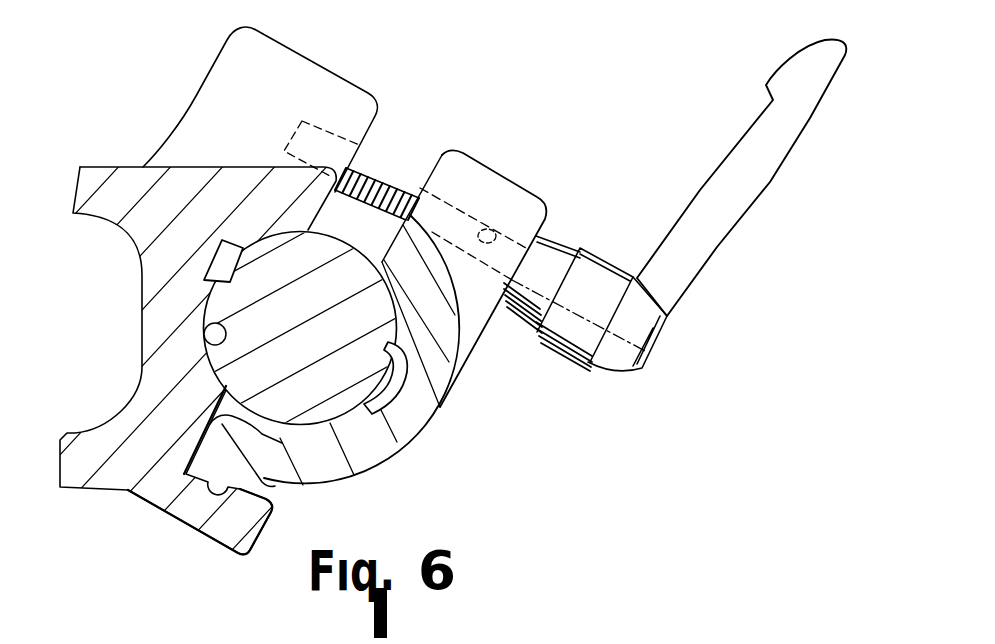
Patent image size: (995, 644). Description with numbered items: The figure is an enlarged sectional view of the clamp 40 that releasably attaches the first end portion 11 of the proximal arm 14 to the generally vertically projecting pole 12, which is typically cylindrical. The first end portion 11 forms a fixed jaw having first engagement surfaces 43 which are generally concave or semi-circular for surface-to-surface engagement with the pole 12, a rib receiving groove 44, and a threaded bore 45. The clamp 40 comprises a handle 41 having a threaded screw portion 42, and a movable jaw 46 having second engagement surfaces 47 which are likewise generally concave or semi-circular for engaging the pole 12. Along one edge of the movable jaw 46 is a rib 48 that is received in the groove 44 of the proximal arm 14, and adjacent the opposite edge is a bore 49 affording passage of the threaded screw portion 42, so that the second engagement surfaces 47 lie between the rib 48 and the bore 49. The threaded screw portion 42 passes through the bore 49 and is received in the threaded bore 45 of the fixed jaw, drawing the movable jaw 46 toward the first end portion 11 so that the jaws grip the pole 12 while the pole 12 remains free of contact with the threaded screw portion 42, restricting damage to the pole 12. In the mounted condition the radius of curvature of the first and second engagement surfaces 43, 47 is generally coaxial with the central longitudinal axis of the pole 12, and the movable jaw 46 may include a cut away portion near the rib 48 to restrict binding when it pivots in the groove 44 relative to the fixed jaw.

The first end portion 11 is at (224, 556).
The pole 12 is at (233, 302).
The proximal arm 14 is at (128, 150).
The clamp 40 is at (470, 130).
The handle 41 is at (693, 254).
The threaded screw portion 42 is at (372, 172).
The first engagement surfaces 43 is at (218, 338).
The rib receiving groove 44 is at (192, 492).
The threaded bore 45 is at (333, 124).
The movable jaw 46 is at (388, 444).
The second engagement surfaces 47 is at (392, 395).
The rib 48 is at (228, 465).
The bore 49 is at (487, 220).